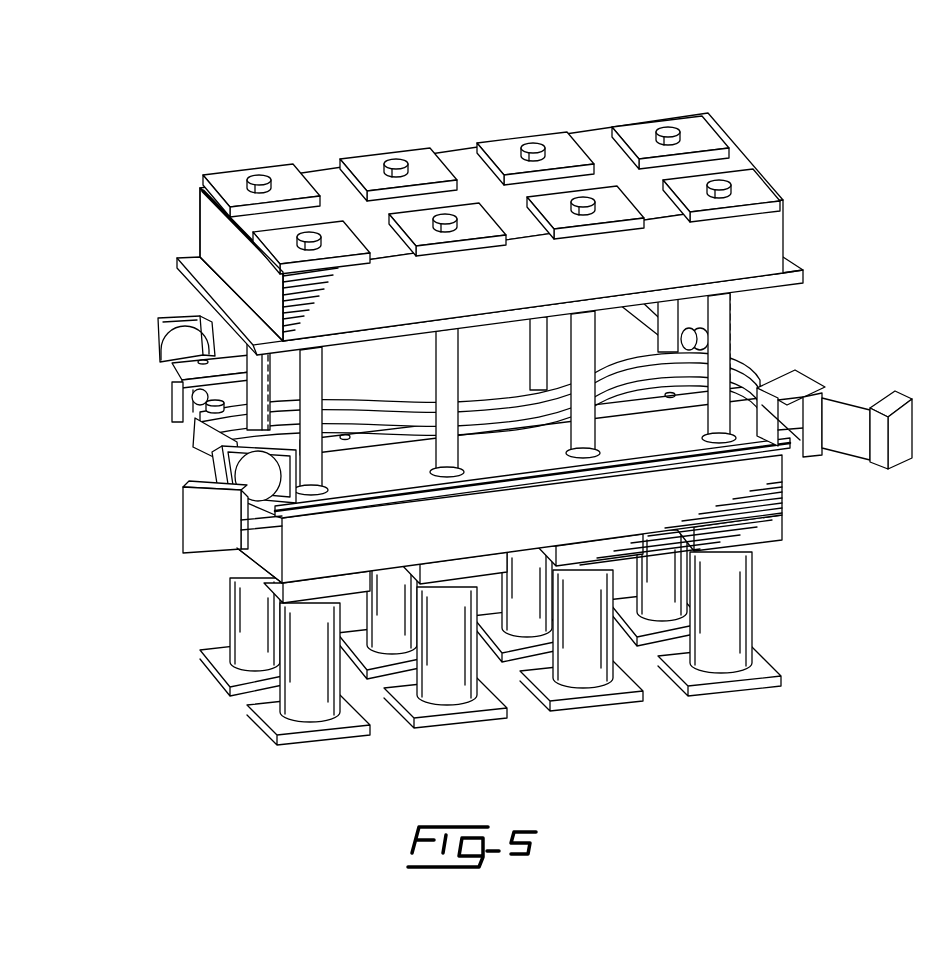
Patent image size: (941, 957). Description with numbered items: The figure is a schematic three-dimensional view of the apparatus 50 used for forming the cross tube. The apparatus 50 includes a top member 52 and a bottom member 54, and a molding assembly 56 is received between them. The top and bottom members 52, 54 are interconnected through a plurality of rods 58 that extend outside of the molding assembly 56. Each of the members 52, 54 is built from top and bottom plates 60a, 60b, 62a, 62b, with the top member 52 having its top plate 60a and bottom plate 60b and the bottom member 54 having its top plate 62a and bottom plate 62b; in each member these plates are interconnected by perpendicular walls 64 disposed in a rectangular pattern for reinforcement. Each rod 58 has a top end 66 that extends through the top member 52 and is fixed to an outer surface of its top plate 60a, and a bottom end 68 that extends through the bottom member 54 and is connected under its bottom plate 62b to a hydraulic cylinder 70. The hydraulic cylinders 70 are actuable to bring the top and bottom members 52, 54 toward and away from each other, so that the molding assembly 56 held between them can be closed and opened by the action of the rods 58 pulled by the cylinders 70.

The apparatus 50 is at (482, 401).
The top member 52 is at (480, 225).
The bottom member 54 is at (795, 503).
The molding assembly 56 is at (167, 449).
The rods 58 is at (724, 325).
The top plate 60a is at (200, 189).
The bottom plate 60b is at (190, 270).
The top plate 62a is at (200, 462).
The bottom plate 62b is at (253, 563).
The perpendicular walls 64 is at (215, 248).
The top end 66 is at (263, 178).
The bottom end 68 is at (750, 556).
The hydraulic cylinder 70 is at (725, 632).